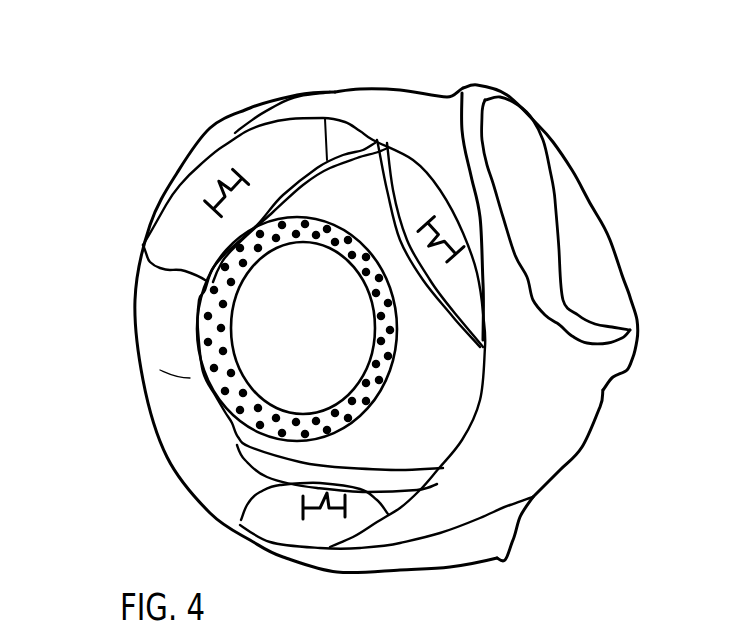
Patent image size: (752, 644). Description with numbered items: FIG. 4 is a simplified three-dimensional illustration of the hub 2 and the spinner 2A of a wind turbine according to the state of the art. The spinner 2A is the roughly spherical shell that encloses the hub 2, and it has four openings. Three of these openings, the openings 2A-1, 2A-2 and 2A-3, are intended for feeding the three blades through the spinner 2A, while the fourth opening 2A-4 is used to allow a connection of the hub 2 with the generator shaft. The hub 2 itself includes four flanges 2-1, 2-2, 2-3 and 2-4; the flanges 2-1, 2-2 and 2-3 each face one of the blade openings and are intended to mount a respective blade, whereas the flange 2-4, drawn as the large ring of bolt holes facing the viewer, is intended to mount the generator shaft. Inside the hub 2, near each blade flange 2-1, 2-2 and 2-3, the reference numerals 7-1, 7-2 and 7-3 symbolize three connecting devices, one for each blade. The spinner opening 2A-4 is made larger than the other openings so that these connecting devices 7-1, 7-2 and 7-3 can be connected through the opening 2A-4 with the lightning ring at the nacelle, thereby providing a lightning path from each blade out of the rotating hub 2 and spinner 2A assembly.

The hub 2 is at (360, 167).
The spinner 2A is at (555, 438).
The opening 2A-1 is at (187, 162).
The opening 2A-2 is at (607, 262).
The opening 2A-3 is at (497, 558).
The opening 2A-4 is at (160, 370).
The flange 2-1 is at (263, 182).
The flange 2-2 is at (457, 267).
The flange 2-3 is at (370, 493).
The flange 2-4 is at (260, 347).
The connecting device 7-1 is at (209, 209).
The connecting device 7-2 is at (448, 236).
The connecting device 7-3 is at (322, 512).